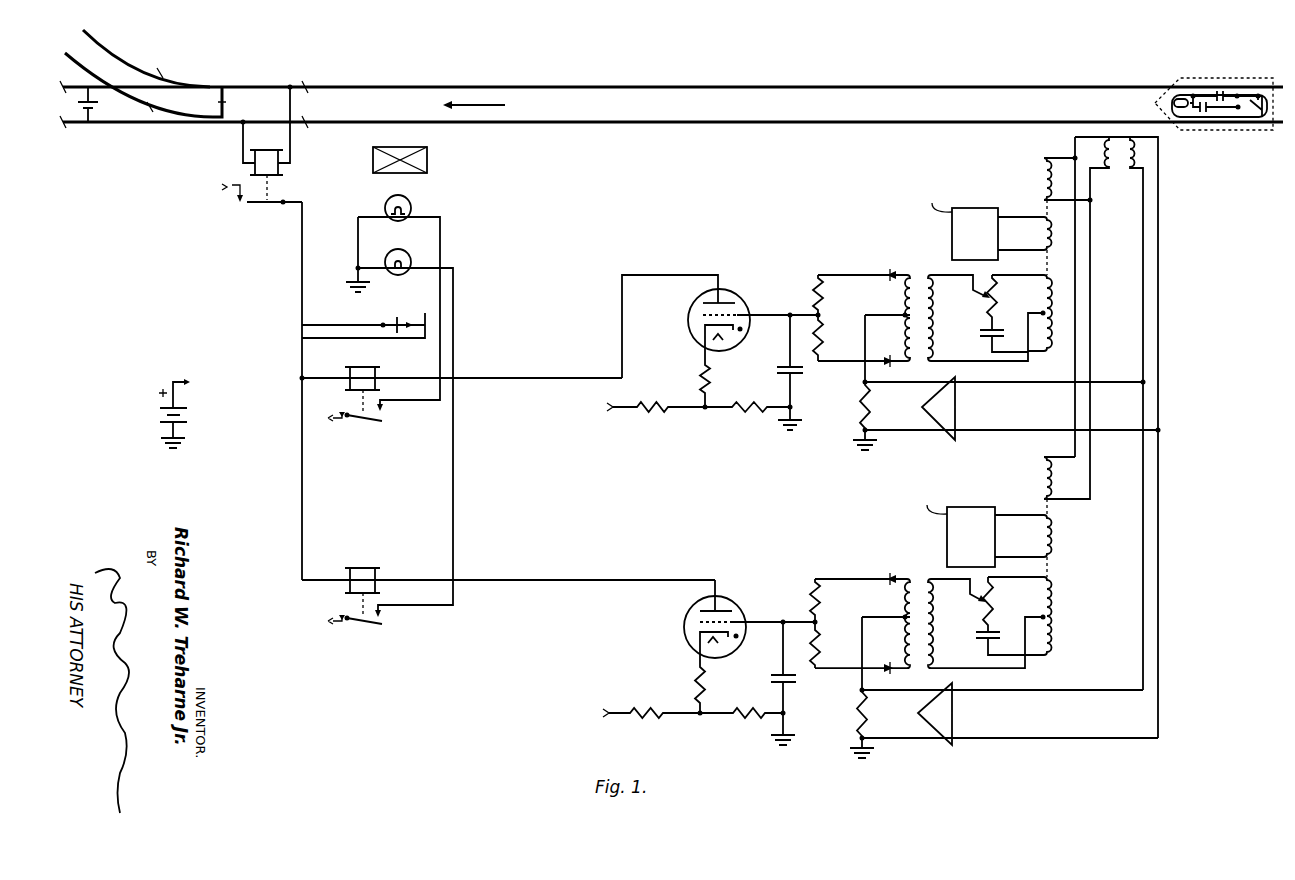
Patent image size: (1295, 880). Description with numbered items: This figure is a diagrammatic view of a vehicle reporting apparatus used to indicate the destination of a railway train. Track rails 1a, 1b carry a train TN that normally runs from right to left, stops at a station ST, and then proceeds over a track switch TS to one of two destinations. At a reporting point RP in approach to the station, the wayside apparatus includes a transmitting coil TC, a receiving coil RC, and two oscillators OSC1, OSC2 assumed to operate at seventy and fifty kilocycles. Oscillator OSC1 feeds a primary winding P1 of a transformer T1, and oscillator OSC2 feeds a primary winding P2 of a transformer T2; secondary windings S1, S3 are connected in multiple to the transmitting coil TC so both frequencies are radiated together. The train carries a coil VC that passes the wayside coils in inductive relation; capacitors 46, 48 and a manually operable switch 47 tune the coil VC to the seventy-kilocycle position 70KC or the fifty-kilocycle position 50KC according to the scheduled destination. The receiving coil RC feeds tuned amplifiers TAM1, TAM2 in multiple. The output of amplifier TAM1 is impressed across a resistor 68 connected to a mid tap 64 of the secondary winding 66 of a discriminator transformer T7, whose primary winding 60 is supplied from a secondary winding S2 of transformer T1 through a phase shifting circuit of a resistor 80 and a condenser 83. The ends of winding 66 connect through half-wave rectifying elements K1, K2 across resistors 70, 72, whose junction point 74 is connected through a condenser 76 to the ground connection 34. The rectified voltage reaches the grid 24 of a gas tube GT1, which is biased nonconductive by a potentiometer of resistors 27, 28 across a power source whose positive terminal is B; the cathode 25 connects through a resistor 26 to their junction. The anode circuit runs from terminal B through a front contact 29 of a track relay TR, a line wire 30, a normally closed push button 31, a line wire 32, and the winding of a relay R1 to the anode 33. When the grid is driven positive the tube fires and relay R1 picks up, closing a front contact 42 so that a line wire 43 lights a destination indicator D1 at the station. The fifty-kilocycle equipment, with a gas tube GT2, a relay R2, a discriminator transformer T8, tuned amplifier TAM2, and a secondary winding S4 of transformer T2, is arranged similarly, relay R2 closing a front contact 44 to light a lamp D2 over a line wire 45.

The track rail 1a is at (722, 87).
The track rail 1b is at (731, 122).
The track switch TS is at (148, 73).
The track relay TR is at (267, 143).
The front contact 29 is at (267, 191).
The line wire 30 is at (302, 293).
The normally closed manually operable push button 31 is at (385, 322).
The line wire 32 is at (302, 492).
The station ST is at (400, 148).
The destination indicator D1 is at (414, 201).
The destination indicator D2 is at (414, 255).
The line wire 43 is at (440, 219).
The line wire 45 is at (453, 275).
The relay R1 is at (462, 378).
The front contact 42 is at (345, 411).
The relay R2 is at (508, 581).
The front contact 44 is at (345, 614).
The positive terminal of power source B is at (378, 450).
The gas tube GT1 is at (693, 300).
The anode 33 is at (724, 301).
The grid 24 is at (746, 315).
The cathode 25 is at (703, 326).
The resistor 26 is at (710, 379).
The resistor 27 is at (652, 398).
The resistor 28 is at (758, 398).
The ground connection 34 is at (793, 407).
The condenser 76 is at (783, 367).
The resistor 70 is at (823, 287).
The junction point 74 is at (821, 315).
The resistor 72 is at (821, 339).
The half-wave rectifying element K1 is at (890, 272).
The half-wave rectifying element K2 is at (862, 350).
The discriminator transformer T7 is at (915, 259).
The secondary winding 66 is at (903, 300).
The mid tap 64 is at (907, 319).
The primary winding 60 is at (985, 318).
The secondary winding S2 is at (1042, 291).
The resistor 80 is at (984, 303).
The condenser 83 is at (986, 335).
The tuned amplifier TAM1 is at (930, 391).
The resistor 68 is at (870, 416).
The oscillator OSC1 is at (945, 220).
The primary winding P1 is at (1040, 234).
The secondary winding S1 is at (1038, 168).
The transformer T1 is at (1091, 436).
The transmitting coil TC is at (1104, 168).
The receiving coil RC is at (1131, 168).
The transformer T2 is at (1037, 444).
The secondary winding S3 is at (1047, 476).
The oscillator OSC2 is at (940, 524).
The primary winding P2 is at (1036, 538).
The secondary winding S4 is at (1055, 601).
The gas tube GT2 is at (690, 608).
The discriminator transformer T8 is at (929, 621).
The tuned amplifier TAM2 is at (928, 698).
The reporting point RP is at (1191, 78).
The train TN is at (1180, 78).
The coil VC is at (1175, 96).
The capacitor 46 is at (1219, 90).
The capacitor 48 is at (1203, 117).
The seventy-kilocycle tuning position 70KC is at (1256, 94).
The fifty-kilocycle tuning position 50KC is at (1250, 104).
The manually operable switch 47 is at (1265, 110).